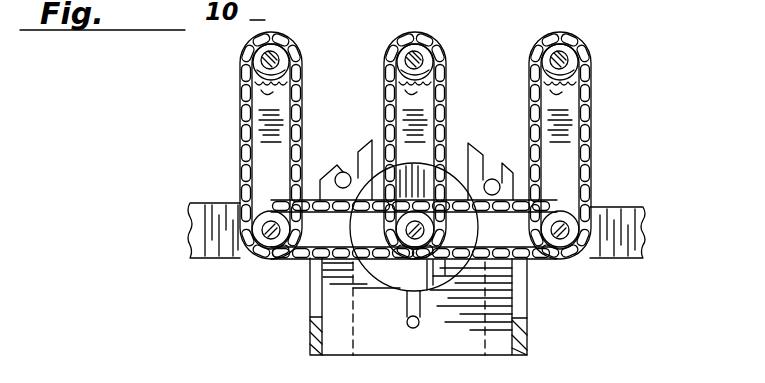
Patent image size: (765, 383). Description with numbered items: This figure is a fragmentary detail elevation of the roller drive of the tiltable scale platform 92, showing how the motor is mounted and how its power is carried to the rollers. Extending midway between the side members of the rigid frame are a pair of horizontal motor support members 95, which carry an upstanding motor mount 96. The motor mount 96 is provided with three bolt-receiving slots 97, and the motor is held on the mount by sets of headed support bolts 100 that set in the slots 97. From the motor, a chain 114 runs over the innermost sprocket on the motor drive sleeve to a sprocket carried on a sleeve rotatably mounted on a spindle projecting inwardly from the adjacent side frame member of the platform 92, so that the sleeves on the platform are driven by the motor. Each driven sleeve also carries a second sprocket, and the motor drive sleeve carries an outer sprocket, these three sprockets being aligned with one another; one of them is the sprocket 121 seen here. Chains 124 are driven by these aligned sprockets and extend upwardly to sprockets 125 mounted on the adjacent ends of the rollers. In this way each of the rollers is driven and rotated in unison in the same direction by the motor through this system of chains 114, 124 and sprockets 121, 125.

The tiltable scale platform 92 is at (635, 260).
The horizontal motor support member 95 is at (308, 337).
The motor mount 96 is at (398, 337).
The bolt-receiving slot 97 is at (355, 150).
The headed support bolt 100 is at (342, 171).
The chain 114 is at (298, 260).
The sprocket 121 is at (247, 260).
The chain 124 is at (384, 93).
The sprocket 125 is at (260, 95).